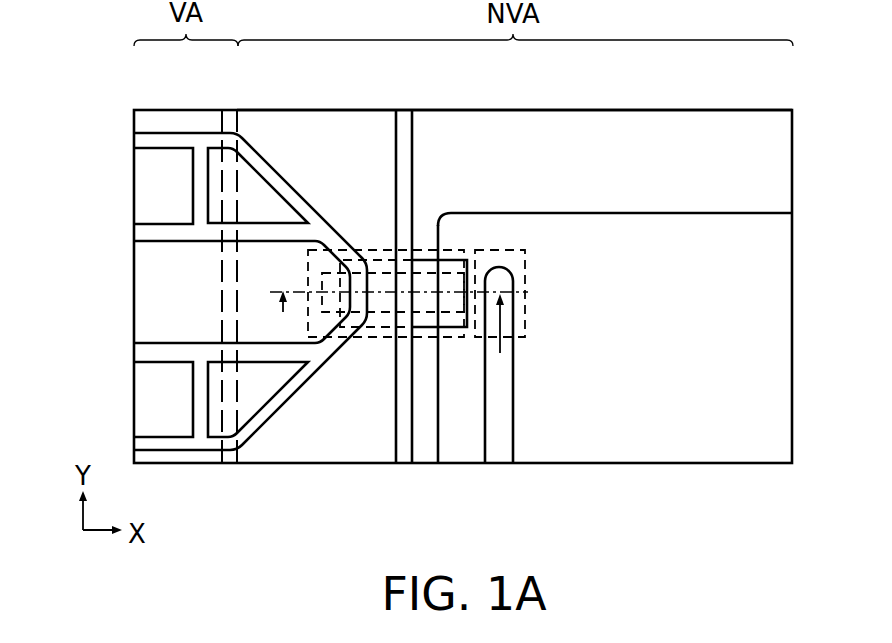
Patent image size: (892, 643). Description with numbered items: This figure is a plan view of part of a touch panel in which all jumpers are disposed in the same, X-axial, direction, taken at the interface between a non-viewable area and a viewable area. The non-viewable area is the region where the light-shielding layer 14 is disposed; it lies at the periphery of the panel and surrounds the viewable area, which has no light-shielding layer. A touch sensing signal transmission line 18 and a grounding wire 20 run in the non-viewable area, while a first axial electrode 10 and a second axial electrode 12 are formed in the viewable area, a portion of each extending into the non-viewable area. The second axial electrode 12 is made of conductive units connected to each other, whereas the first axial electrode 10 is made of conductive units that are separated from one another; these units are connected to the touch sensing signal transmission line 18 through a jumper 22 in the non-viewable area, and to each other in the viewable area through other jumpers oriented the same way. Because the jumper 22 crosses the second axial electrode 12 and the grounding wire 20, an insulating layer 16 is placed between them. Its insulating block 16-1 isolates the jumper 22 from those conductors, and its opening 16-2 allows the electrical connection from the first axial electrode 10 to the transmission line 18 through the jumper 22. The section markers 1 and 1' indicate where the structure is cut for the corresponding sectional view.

The first axial electrode 10 is at (140, 300).
The second axial electrode 12 is at (142, 122).
The light-shielding layer 14 is at (237, 102).
The insulating layer 16 is at (220, 472).
The insulating block 16-1 is at (427, 248).
The opening 16-2 is at (482, 240).
The touch sensing signal transmission line 18 is at (502, 445).
The grounding wire 20 is at (427, 405).
The jumper 22 is at (308, 280).
The section line 1 is at (283, 318).
The section line 1' is at (500, 340).